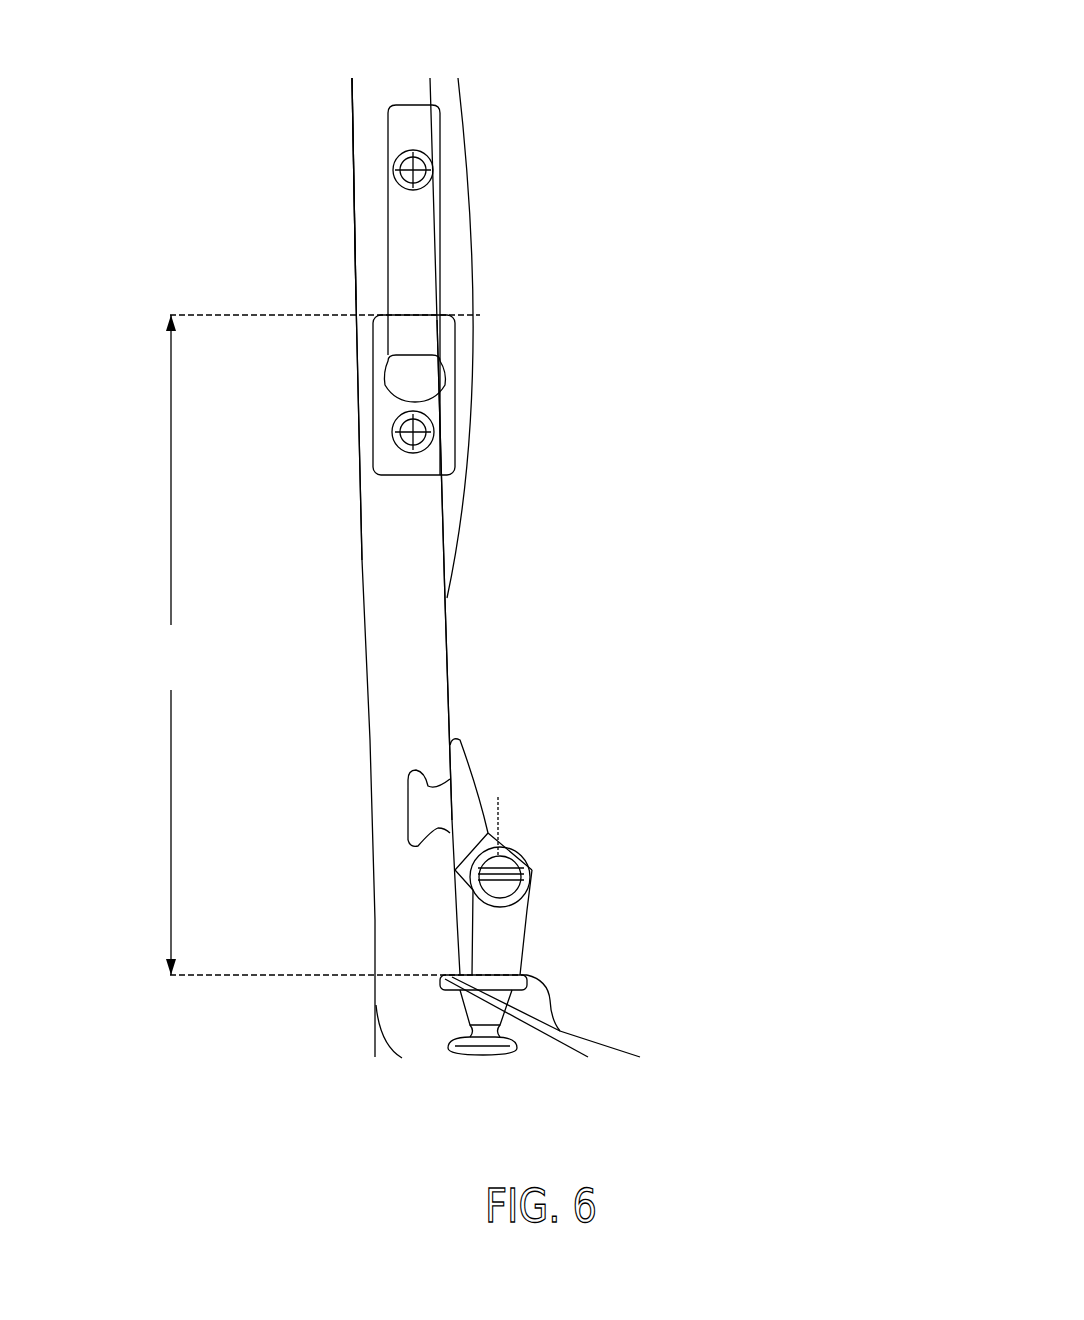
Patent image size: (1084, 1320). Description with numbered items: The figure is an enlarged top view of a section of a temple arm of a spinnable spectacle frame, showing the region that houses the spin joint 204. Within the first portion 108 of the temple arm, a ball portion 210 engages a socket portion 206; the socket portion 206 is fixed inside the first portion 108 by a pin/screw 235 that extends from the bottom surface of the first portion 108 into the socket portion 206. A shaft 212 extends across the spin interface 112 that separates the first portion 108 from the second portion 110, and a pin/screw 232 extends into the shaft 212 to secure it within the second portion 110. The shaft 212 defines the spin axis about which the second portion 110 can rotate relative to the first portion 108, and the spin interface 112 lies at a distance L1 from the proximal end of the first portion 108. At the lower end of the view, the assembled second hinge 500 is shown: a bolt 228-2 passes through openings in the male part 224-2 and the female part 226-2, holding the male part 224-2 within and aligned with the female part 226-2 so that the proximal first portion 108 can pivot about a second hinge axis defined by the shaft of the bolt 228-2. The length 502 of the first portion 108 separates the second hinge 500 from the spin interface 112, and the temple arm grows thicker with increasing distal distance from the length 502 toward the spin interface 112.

The first portion 108 is at (383, 565).
The second portion 110 is at (367, 170).
The spin interface 112 is at (480, 315).
The spin joint 204 is at (355, 273).
The socket portion 206 is at (463, 462).
The ball portion 210 is at (420, 390).
The shaft 212 is at (420, 262).
The pin/screw 232 is at (413, 170).
The pin/screw 235 is at (395, 432).
The length 502 is at (428, 683).
The second hinge 500 is at (548, 905).
The female part 226-2 is at (520, 848).
The bolt 228-2 is at (530, 867).
The male part 224-2 is at (503, 955).
The distance L1 is at (174, 645).